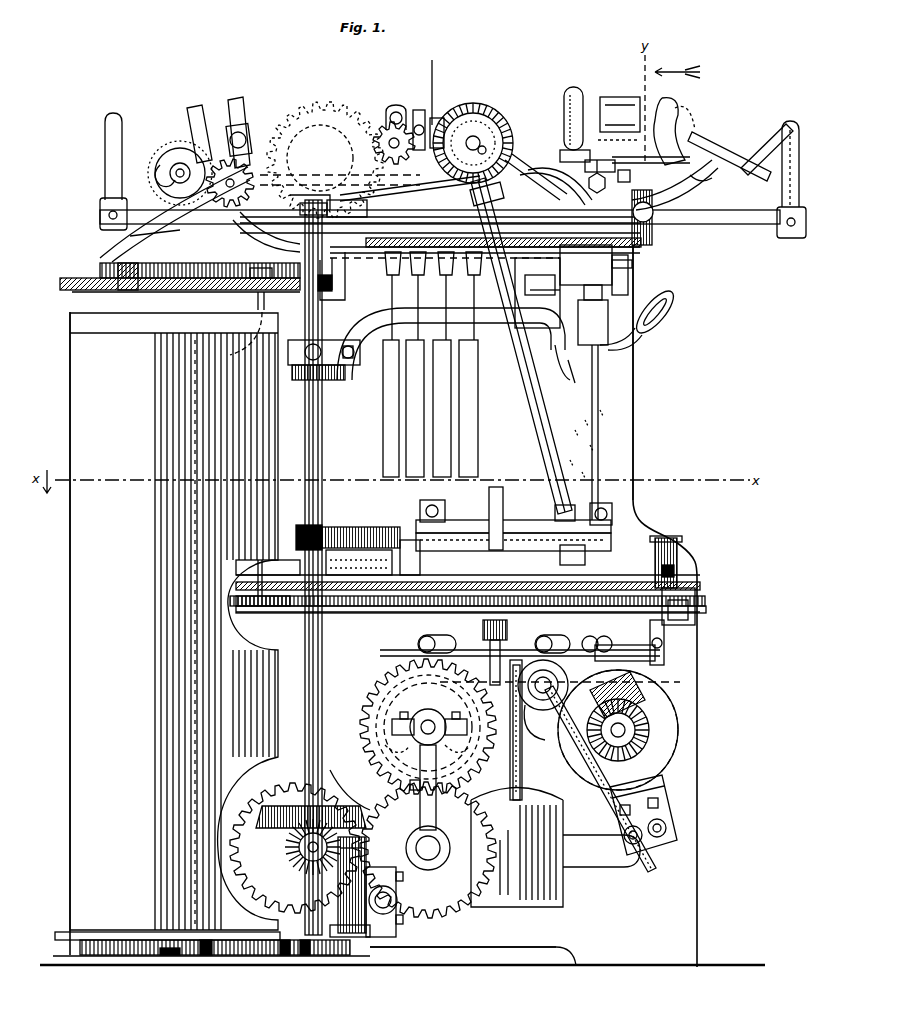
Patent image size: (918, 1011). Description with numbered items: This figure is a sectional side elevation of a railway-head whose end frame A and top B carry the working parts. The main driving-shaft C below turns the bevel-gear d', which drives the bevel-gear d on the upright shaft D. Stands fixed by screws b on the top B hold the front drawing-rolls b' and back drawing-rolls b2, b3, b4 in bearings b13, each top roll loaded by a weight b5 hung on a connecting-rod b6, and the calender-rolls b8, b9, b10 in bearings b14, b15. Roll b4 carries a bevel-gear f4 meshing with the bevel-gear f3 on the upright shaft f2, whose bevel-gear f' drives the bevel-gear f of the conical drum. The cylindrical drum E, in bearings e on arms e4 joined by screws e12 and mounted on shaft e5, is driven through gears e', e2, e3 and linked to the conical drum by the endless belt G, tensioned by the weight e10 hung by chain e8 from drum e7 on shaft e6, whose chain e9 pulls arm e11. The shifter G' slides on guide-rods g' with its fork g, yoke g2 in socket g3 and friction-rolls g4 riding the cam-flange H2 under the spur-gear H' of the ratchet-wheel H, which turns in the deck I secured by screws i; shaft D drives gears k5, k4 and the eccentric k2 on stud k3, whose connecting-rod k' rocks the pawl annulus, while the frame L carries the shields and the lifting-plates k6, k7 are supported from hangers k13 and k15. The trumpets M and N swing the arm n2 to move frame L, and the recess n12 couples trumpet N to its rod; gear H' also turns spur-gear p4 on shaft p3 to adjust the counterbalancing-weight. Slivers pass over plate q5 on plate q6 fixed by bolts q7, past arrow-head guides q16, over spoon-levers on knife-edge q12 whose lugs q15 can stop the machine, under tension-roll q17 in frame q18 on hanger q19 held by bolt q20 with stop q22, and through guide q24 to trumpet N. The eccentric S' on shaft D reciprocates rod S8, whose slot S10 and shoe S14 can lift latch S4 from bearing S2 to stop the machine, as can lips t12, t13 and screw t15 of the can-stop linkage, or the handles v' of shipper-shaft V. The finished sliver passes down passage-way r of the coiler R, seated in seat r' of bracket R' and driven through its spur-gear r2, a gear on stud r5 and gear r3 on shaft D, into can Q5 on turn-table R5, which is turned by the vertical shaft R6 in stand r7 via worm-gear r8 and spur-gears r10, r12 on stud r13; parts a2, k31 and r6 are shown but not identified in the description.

The receiving can Q5 is at (174, 621).
The bracket or plate R' is at (169, 300).
The seat r' is at (183, 264).
The spur-gear r2 is at (128, 290).
The shaft p3 is at (255, 305).
The stud r5 is at (236, 333).
The upright shaft D is at (303, 567).
The arm n2 is at (345, 382).
The plate a2 is at (328, 206).
The spur-gear r3 is at (330, 290).
The screws b is at (345, 270).
The connecting-rod b6 is at (434, 296).
The weight b5 is at (431, 408).
The rod S8 is at (451, 344).
The front trumpet M is at (290, 103).
The bearings b13 is at (385, 120).
The front pair of drawing-rolls b' is at (389, 105).
The back pair of drawing-rolls b2 is at (418, 110).
The back pair of drawing-rolls b3 is at (440, 118).
The bevel-gear f4 is at (480, 103).
The bevel-gear f3 is at (485, 154).
The back pair of drawing-rolls b4 is at (515, 130).
The rear trumpet N is at (533, 118).
The upright shaft f2 is at (545, 418).
The eccentric S' is at (571, 315).
The rod k31 is at (598, 410).
The hangers k13 is at (603, 503).
The latch S4 is at (645, 335).
The slot S10 is at (672, 320).
The bearings S2 is at (630, 275).
The horizontal lip t12 is at (612, 258).
The overhanging lip t13 is at (625, 265).
The adjustable screw t15 is at (542, 290).
The plate or top B is at (537, 293).
The shoe or block S14 is at (568, 364).
The end frame or standard A is at (633, 420).
The shipper-shaft V is at (730, 224).
The handles v' is at (443, 166).
The plate q5 is at (799, 160).
The plate q6 is at (686, 185).
The lugs q15 is at (710, 191).
The bolts q7 is at (728, 155).
The knife-edge support q12 is at (700, 140).
The arrow-head-shaped guides q16 is at (770, 150).
The lug or stop q22 is at (583, 100).
The guide q24 is at (562, 148).
The inverted-U-shaped frame q18 is at (615, 97).
The hanger q19 is at (624, 145).
The bolt q20 is at (624, 175).
The tension-roll q17 is at (660, 100).
The recess n12 is at (585, 165).
The front calender-roll b10 is at (165, 155).
The bearings b15 is at (160, 172).
The bottom calender-roll b9 is at (240, 235).
The bearings b14 is at (198, 105).
The top calender-roll b8 is at (236, 97).
The coiler R is at (175, 214).
The passage-way r is at (151, 241).
The gear k5 is at (296, 528).
The stud k3 is at (345, 527).
The gear k4 is at (370, 550).
The connecting-rod k' is at (409, 542).
The lifting-plate k6 is at (460, 533).
The frame L is at (500, 487).
The lifting-plate k7 is at (570, 545).
The spur-gear H' is at (669, 548).
The hangers k15 is at (674, 572).
The shield or deck I is at (695, 595).
The volute-shaped cam-flange H2 is at (470, 601).
The ratchet-wheel H is at (422, 601).
The eccentric k2 is at (380, 598).
The screws i is at (688, 610).
The spur-gear p4 is at (255, 606).
The fork or spanner g is at (520, 657).
The guide-rods g' is at (502, 640).
The shifter G' is at (665, 642).
The friction-rolls g4 is at (483, 628).
The cylindrical drum E is at (419, 727).
The bearings e is at (428, 714).
The socket g3 is at (435, 723).
The yoke g2 is at (428, 723).
The gear e3 is at (457, 747).
The arms e4 is at (397, 745).
The screws e12 is at (410, 774).
The gear e' is at (357, 790).
The shaft e5 is at (428, 807).
The gear e2 is at (428, 850).
The shaft e6 is at (543, 685).
The drum e7 is at (540, 700).
The chain e8 is at (520, 745).
The chain e9 is at (600, 779).
The endless belt G is at (532, 730).
The weight e10 is at (517, 848).
The arm e11 is at (580, 862).
The bevel-gear f' is at (620, 728).
The bevel-gear f is at (619, 737).
The bevel-gear d is at (311, 793).
The main driving-shaft C is at (313, 847).
The bevel-gear d' is at (295, 848).
The worm-gear r8 is at (359, 847).
The stand r7 is at (356, 865).
The turn-table R5 is at (70, 940).
The vertical shaft R6 is at (350, 955).
The block r6 is at (170, 955).
The stud r13 is at (285, 955).
The spur-gear r12 is at (305, 955).
The spur-gear r10 is at (370, 952).